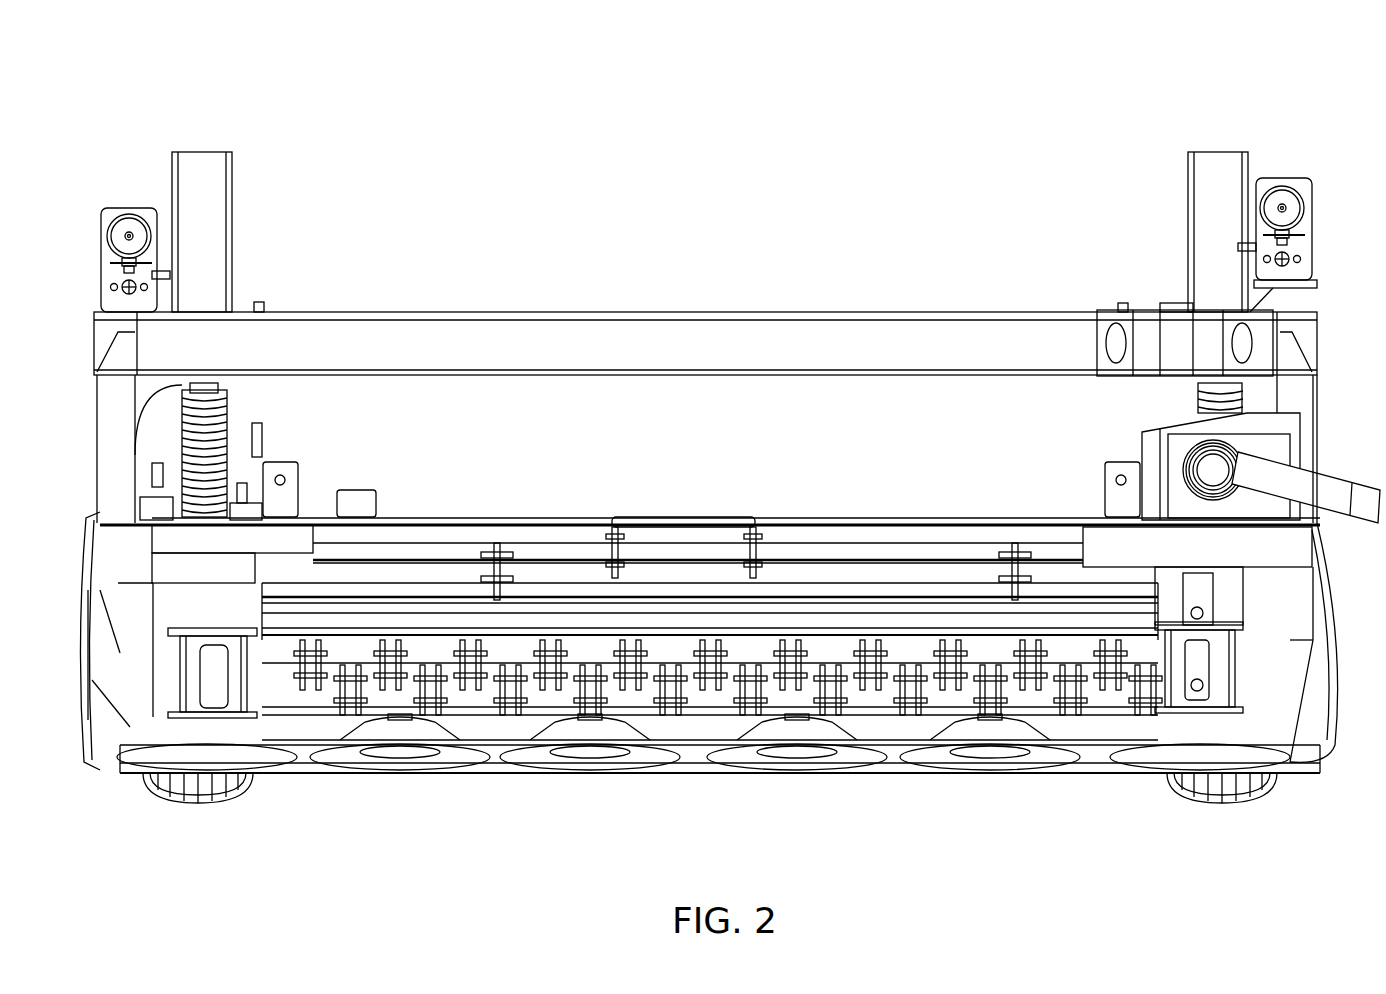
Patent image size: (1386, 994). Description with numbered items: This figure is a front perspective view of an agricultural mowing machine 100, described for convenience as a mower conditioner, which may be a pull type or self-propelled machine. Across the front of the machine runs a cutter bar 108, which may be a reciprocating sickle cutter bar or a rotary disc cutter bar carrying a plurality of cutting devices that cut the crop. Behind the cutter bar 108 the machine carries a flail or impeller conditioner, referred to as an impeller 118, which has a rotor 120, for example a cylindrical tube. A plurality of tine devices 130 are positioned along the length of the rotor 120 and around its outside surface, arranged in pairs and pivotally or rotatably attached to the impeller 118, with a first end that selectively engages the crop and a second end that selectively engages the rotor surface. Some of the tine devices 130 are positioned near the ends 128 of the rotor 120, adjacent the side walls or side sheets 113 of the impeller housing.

The agricultural mowing machine 100 is at (420, 68).
The cutter bar 108 is at (433, 727).
The side sheets 113 is at (253, 675).
The impeller 118 is at (852, 748).
The rotor 120 is at (813, 678).
The ends 128 is at (267, 673).
The tine devices 130 is at (388, 683).